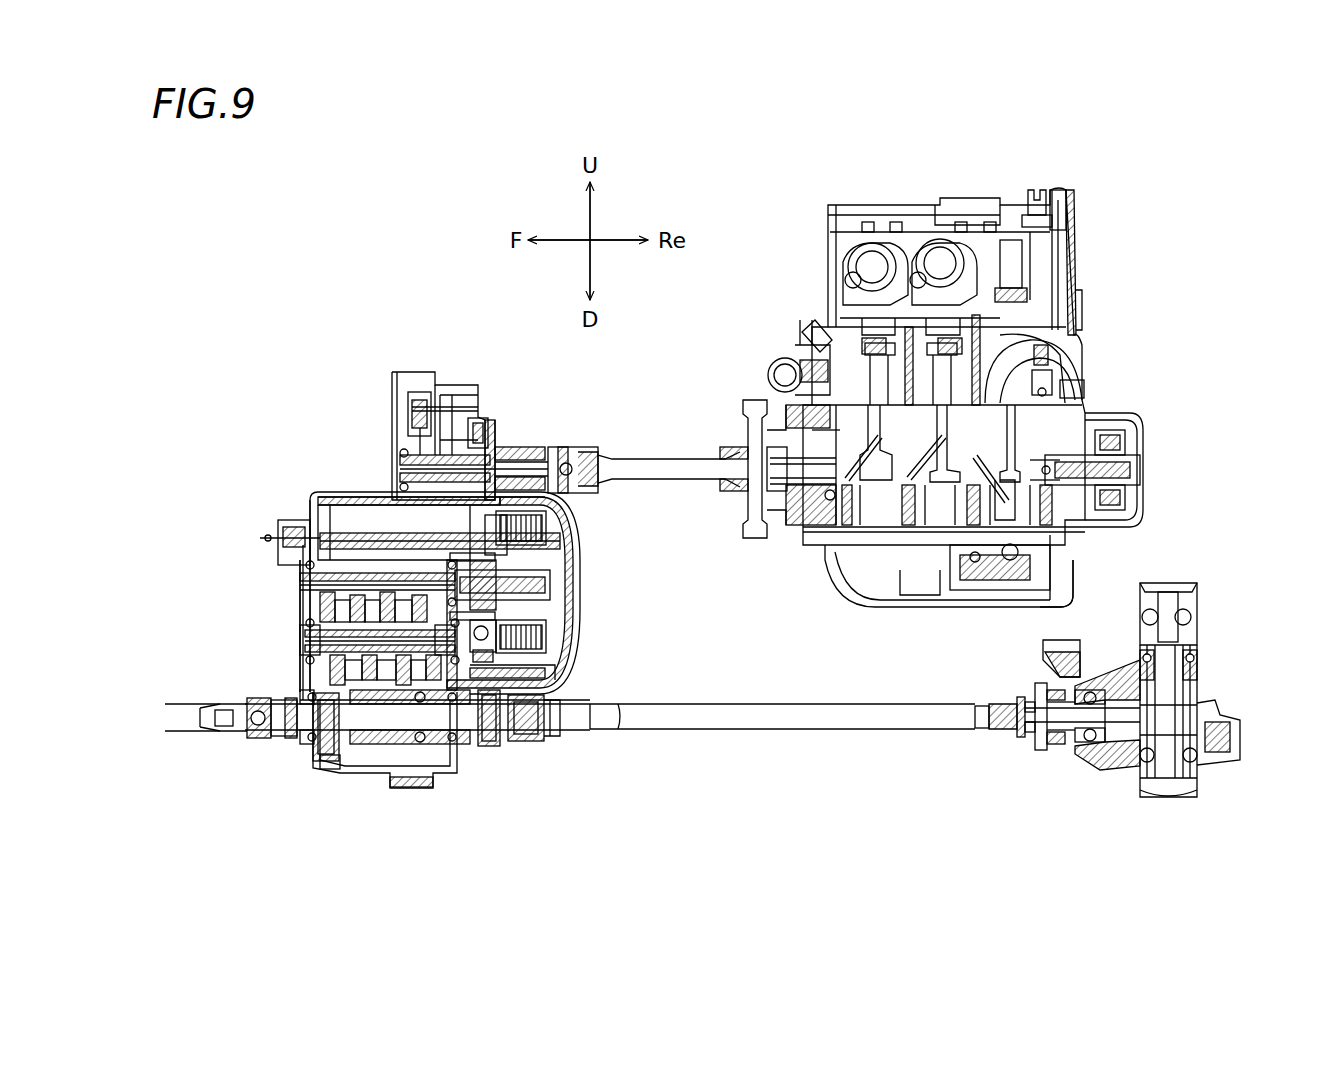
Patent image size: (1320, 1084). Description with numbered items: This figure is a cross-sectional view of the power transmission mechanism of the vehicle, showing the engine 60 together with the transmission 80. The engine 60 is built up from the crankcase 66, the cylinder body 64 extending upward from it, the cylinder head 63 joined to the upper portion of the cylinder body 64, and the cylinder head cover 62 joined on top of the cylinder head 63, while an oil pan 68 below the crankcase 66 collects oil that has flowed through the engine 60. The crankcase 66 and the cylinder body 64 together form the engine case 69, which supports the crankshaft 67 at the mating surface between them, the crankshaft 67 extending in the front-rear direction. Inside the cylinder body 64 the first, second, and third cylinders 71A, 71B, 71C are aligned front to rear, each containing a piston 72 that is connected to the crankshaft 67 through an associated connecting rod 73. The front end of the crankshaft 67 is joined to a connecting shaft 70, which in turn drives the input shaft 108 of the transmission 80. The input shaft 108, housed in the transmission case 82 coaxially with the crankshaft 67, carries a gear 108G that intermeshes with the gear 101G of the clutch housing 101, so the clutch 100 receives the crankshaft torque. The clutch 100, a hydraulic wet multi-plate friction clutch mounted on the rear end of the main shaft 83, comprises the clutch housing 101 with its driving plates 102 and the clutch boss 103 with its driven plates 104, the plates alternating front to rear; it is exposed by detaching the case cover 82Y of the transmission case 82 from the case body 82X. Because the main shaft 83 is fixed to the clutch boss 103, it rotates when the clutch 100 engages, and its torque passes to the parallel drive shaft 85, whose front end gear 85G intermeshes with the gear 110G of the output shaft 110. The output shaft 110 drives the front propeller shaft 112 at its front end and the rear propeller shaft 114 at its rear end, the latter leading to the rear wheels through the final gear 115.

The engine 60 is at (802, 262).
The cylinder head cover 62 is at (1072, 205).
The cylinder head 63 is at (1075, 265).
The cylinder body 64 is at (1082, 341).
The crankcase 66 is at (1110, 520).
The crankshaft 67 is at (1085, 455).
The oil pan 68 is at (1067, 613).
The engine case 69 is at (1240, 385).
The connecting shaft 70 is at (646, 456).
The first cylinder 71A is at (878, 345).
The second cylinder 71B is at (968, 345).
The third cylinder 71C is at (1022, 285).
The piston 72 is at (852, 280).
The connecting rod 73 is at (815, 335).
The transmission 80 is at (333, 527).
The transmission case 82 is at (297, 618).
The case body 82X is at (377, 503).
The case cover 82Y is at (560, 525).
The main shaft 83 is at (427, 550).
The drive shaft 85 is at (307, 643).
The gear 85G is at (315, 522).
The clutch 100 is at (555, 585).
The clutch housing 101 is at (487, 693).
The gear 101G is at (475, 743).
The driving plates 102 is at (528, 657).
The clutch boss 103 is at (578, 680).
The driven plates 104 is at (512, 660).
The input shaft 108 is at (418, 398).
The gear 108G is at (480, 432).
The output shaft 110 is at (372, 723).
The gear 110G is at (332, 773).
The front propeller shaft 112 is at (190, 735).
The rear propeller shaft 114 is at (895, 712).
The final gear 115 is at (1110, 763).